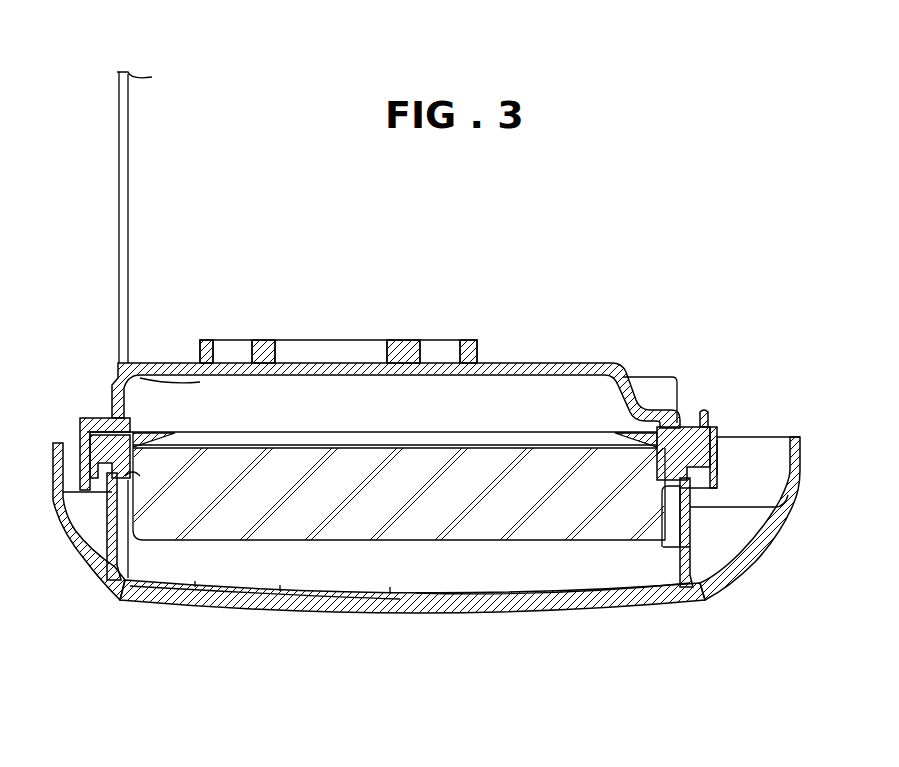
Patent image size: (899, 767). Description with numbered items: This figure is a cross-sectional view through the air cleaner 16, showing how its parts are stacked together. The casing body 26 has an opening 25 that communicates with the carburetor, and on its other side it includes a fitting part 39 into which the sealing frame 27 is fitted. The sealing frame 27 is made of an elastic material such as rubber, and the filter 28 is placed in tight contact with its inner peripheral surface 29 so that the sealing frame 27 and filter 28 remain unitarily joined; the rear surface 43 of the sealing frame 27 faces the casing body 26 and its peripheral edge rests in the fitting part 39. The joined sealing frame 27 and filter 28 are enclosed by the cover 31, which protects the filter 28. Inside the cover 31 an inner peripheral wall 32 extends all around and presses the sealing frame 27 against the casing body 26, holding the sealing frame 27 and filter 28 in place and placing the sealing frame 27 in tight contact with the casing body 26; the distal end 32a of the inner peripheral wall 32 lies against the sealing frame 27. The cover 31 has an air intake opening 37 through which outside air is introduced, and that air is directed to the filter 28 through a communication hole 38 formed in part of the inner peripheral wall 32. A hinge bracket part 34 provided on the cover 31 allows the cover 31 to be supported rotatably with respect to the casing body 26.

The air cleaner 16 is at (303, 645).
The opening 25 is at (372, 345).
The casing body 26 is at (631, 357).
The sealing frame 27 is at (128, 478).
The filter 28 is at (586, 570).
The inner peripheral surface 29 is at (132, 472).
The cover 31 is at (535, 628).
The inner peripheral wall 32 is at (103, 530).
The distal end 32a is at (120, 462).
The hinge bracket part 34 is at (735, 464).
The air intake opening 37 is at (778, 436).
The communication hole 38 is at (695, 582).
The fitting part 39 is at (86, 509).
The rear surface 43 is at (112, 410).